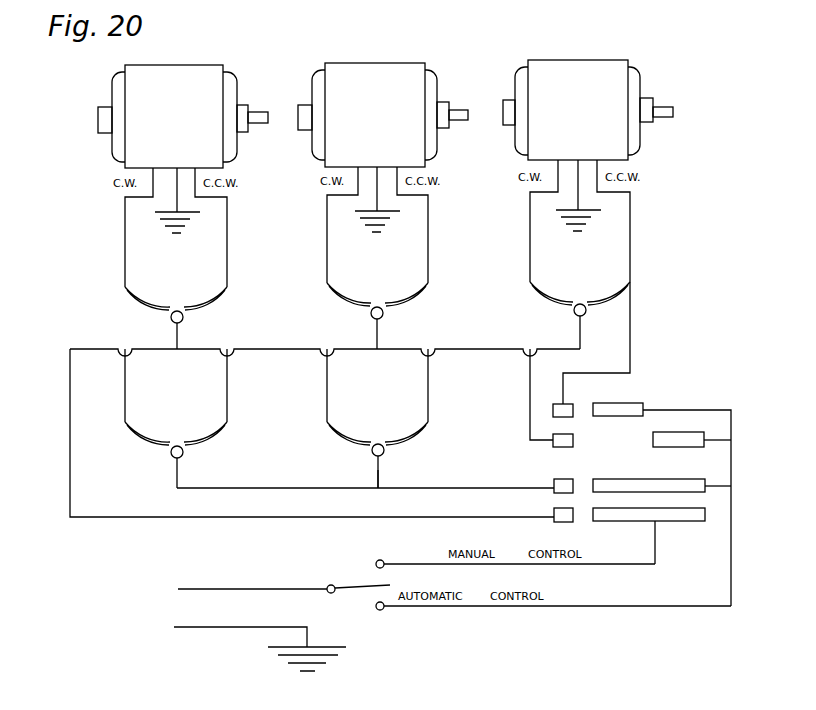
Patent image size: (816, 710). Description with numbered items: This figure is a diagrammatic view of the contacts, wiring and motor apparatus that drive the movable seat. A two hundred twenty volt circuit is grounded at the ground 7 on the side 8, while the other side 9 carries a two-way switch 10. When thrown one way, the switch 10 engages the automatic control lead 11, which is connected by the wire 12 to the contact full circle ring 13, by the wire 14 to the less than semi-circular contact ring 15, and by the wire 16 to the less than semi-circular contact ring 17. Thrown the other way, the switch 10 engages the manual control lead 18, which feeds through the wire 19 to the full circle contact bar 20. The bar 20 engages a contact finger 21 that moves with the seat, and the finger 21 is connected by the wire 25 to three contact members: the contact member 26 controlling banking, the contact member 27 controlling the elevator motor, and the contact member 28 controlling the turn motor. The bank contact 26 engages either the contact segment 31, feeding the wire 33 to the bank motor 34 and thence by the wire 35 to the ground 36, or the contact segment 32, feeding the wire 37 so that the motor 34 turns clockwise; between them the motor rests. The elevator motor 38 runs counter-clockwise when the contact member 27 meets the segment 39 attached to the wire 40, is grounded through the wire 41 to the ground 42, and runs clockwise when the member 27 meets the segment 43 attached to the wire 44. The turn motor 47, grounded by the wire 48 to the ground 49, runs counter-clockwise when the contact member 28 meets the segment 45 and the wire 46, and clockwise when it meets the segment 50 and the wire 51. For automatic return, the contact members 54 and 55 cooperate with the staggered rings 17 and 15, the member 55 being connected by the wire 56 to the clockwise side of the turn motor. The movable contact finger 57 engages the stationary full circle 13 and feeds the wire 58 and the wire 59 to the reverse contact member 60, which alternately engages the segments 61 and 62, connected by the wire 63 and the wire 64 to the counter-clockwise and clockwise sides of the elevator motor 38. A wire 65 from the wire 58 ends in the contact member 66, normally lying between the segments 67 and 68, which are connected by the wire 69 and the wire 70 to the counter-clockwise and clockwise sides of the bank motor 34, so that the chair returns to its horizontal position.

The ground 7 is at (322, 664).
The grounded side of circuit 8 is at (212, 627).
The other side of circuit 9 is at (276, 588).
The two-way switch 10 is at (358, 588).
The automatic control lead 11 is at (640, 606).
The wire 12 is at (722, 486).
The contact full circle ring 13 is at (680, 486).
The wire 14 is at (708, 440).
The less than semi-circular contact ring 15 is at (672, 440).
The wire 16 is at (722, 410).
The less than semi-circular contact ring 17 is at (630, 403).
The manual control lead 18 is at (617, 564).
The wire 19 is at (655, 552).
The full circle contact bar 20 is at (692, 518).
The contact finger 21 is at (554, 510).
The wire 25 is at (278, 520).
The contact member 26 is at (175, 331).
The contact member 27 is at (375, 332).
The contact member 28 is at (578, 330).
The contact segment 31 is at (210, 298).
The contact segment 32 is at (158, 296).
The wire 33 is at (227, 228).
The bank motor 34 is at (206, 77).
The wire 35 is at (175, 210).
The ground 36 is at (183, 232).
The wire 37 is at (125, 243).
The elevator motor 38 is at (418, 70).
The segment 39 is at (412, 298).
The wire 40 is at (428, 228).
The wire 41 is at (375, 208).
The ground 42 is at (383, 230).
The segment 43 is at (352, 296).
The wire 44 is at (327, 223).
The segment 45 is at (614, 298).
The wire 46 is at (630, 236).
The turn motor 47 is at (618, 70).
The wire 48 is at (576, 207).
The ground 49 is at (583, 229).
The segment 50 is at (554, 296).
The wire 51 is at (530, 229).
The contact member 54 is at (575, 404).
The contact member 55 is at (630, 345).
The wire 56 is at (530, 386).
The movable contact finger 57 is at (573, 480).
The wire 58 is at (485, 488).
The wire 59 is at (376, 476).
The reverse contact member 60 is at (371, 453).
The segment 61 is at (412, 430).
The segment 62 is at (346, 428).
The wire 63 is at (428, 388).
The wire 64 is at (327, 389).
The wire 65 is at (280, 488).
The contact member 66 is at (172, 462).
The segment 67 is at (212, 436).
The segment 68 is at (140, 432).
The wire 69 is at (227, 390).
The wire 70 is at (125, 405).